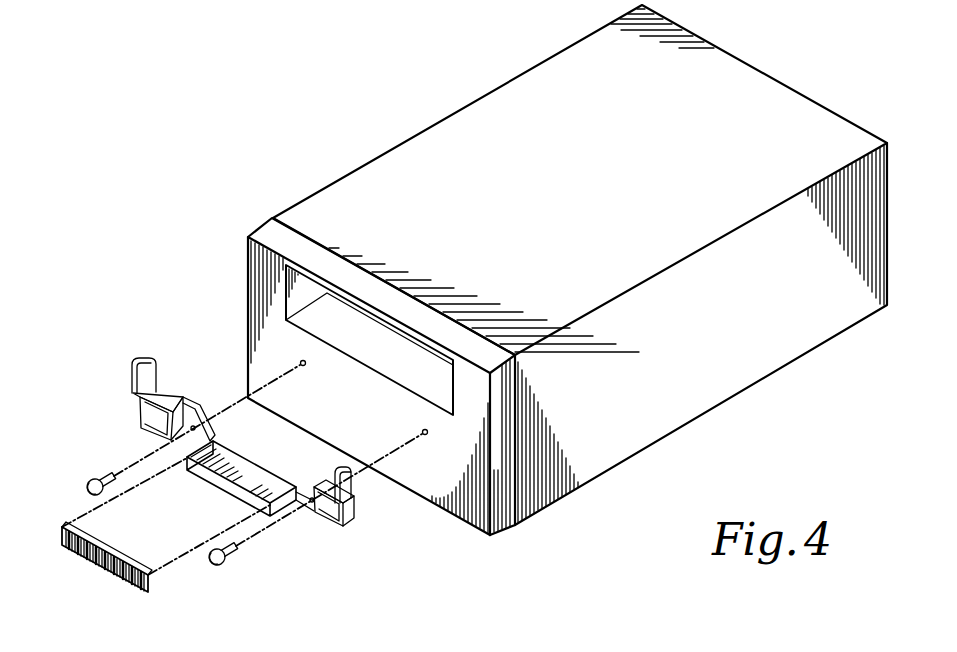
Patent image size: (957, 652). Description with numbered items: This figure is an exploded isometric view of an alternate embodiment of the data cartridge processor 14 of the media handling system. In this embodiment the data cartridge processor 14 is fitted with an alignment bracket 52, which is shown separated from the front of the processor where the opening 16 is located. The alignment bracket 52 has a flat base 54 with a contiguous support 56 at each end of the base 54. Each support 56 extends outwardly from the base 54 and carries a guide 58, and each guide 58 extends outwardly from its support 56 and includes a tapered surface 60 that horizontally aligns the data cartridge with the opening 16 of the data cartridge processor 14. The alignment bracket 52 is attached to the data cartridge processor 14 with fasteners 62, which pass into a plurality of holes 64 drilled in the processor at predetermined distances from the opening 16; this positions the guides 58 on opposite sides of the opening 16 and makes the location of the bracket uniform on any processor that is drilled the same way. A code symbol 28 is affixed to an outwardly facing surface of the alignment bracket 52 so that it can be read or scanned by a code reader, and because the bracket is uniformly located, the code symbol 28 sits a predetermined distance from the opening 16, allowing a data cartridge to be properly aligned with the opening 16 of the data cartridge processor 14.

The data cartridge processor 14 is at (463, 107).
The opening 16 is at (286, 297).
The code symbol 28 is at (97, 565).
The alignment bracket 52 is at (308, 566).
The flat base 54 is at (207, 410).
The support 56 is at (148, 418).
The guide 58 is at (142, 358).
The tapered surface 60 is at (143, 383).
The fasteners 62 is at (87, 490).
The holes 64 is at (304, 366).